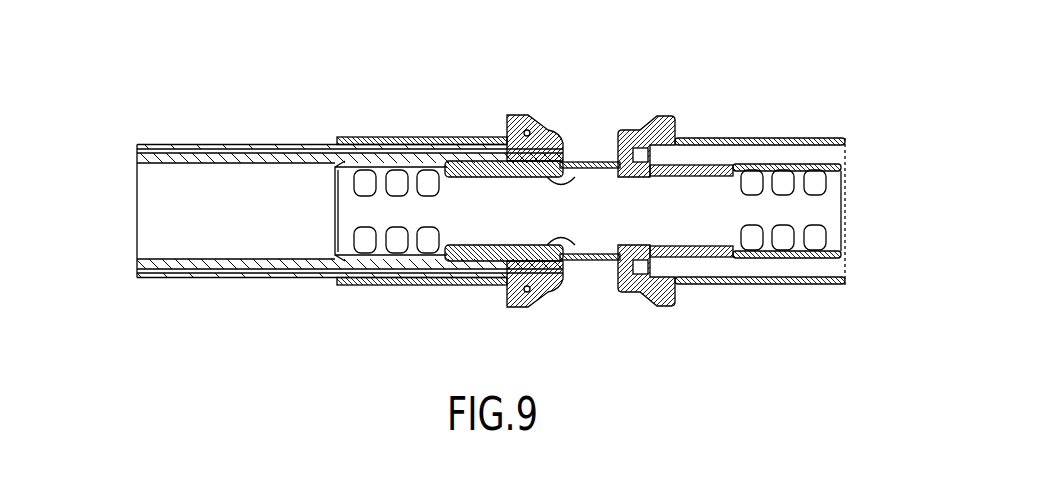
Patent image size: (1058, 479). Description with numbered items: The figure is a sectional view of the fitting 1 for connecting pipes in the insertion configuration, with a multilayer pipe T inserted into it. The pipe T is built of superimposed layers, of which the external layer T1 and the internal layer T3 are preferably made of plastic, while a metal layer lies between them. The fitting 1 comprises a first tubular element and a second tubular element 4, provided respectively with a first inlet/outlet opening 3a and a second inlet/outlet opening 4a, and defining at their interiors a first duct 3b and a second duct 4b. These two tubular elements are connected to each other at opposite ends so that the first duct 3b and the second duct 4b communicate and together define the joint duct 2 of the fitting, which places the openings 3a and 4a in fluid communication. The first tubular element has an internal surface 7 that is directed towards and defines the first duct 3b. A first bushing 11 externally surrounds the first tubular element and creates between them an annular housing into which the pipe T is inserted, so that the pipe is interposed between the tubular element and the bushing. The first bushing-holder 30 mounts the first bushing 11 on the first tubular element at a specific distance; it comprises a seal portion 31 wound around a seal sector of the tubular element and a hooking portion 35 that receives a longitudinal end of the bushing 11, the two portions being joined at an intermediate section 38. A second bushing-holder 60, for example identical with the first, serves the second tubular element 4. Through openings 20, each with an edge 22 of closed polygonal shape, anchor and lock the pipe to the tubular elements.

The fitting 1 is at (105, 35).
The pipe T is at (141, 112).
The external layer T1 is at (231, 144).
The internal layer T3 is at (185, 163).
The first bushing 11 is at (397, 138).
The first bushing-holder 30 is at (553, 78).
The first inlet/outlet opening 3a is at (335, 198).
The first duct 3b is at (520, 226).
The seal portion 31 is at (476, 262).
The hooking portion 35 is at (521, 118).
The intermediate section 38 is at (560, 270).
The internal surface 7 is at (566, 182).
The joint duct 2 is at (593, 226).
The second bushing-holder 60 is at (655, 80).
The second tubular element 4 is at (731, 90).
The second inlet/outlet opening 4a is at (848, 178).
The second duct 4b is at (695, 226).
The through openings 20 is at (818, 150).
The edge 22 is at (784, 194).